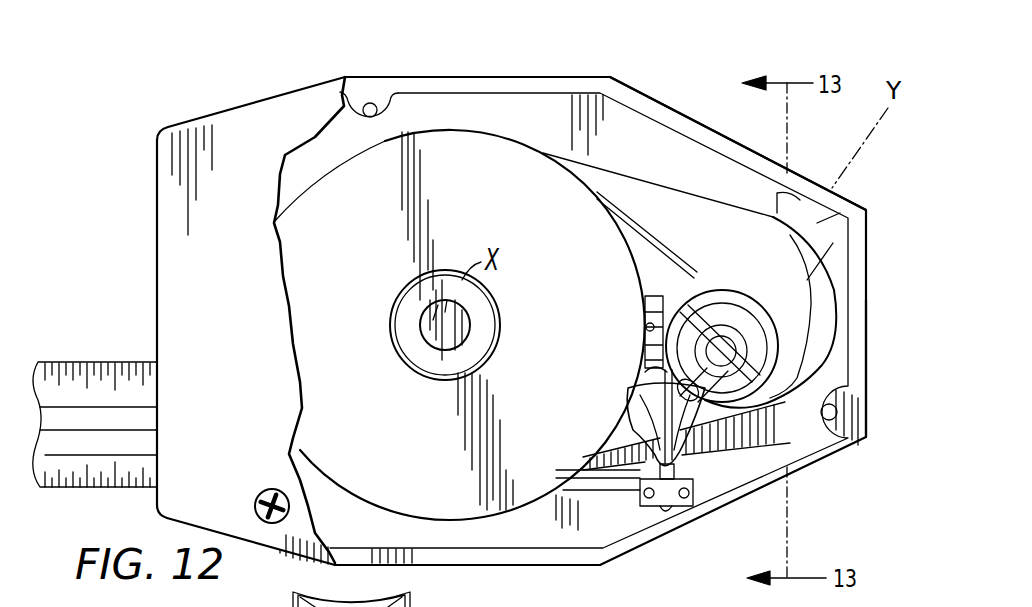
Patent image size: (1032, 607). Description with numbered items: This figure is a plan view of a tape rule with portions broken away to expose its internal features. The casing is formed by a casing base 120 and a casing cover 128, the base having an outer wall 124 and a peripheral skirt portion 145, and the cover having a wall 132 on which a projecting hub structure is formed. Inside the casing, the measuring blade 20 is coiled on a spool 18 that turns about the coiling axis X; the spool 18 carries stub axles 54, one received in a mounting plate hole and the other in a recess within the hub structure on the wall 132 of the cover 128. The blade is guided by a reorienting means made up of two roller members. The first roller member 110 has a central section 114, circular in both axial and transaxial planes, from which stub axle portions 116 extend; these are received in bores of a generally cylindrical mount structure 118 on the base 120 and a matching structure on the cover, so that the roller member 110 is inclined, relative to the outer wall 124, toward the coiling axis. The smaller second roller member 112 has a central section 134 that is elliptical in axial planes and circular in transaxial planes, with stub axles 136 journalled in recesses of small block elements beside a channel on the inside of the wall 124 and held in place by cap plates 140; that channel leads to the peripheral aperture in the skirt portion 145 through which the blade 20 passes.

The spool 18 is at (535, 192).
The measuring blade 20 is at (100, 383).
The stub axle 54 is at (463, 328).
The roller member 110 is at (692, 274).
The second roller member 112 is at (637, 430).
The central section 114 is at (643, 300).
The stub axle portions 116 is at (643, 370).
The mount structure 118 is at (830, 242).
The casing base 120 is at (667, 44).
The outer wall 124 is at (604, 512).
The casing cover 128 is at (157, 260).
The wall 132 is at (257, 348).
The central section 134 is at (630, 396).
The stub axles 136 is at (690, 478).
The cap plates 140 is at (672, 510).
The skirt portion 145 is at (482, 90).